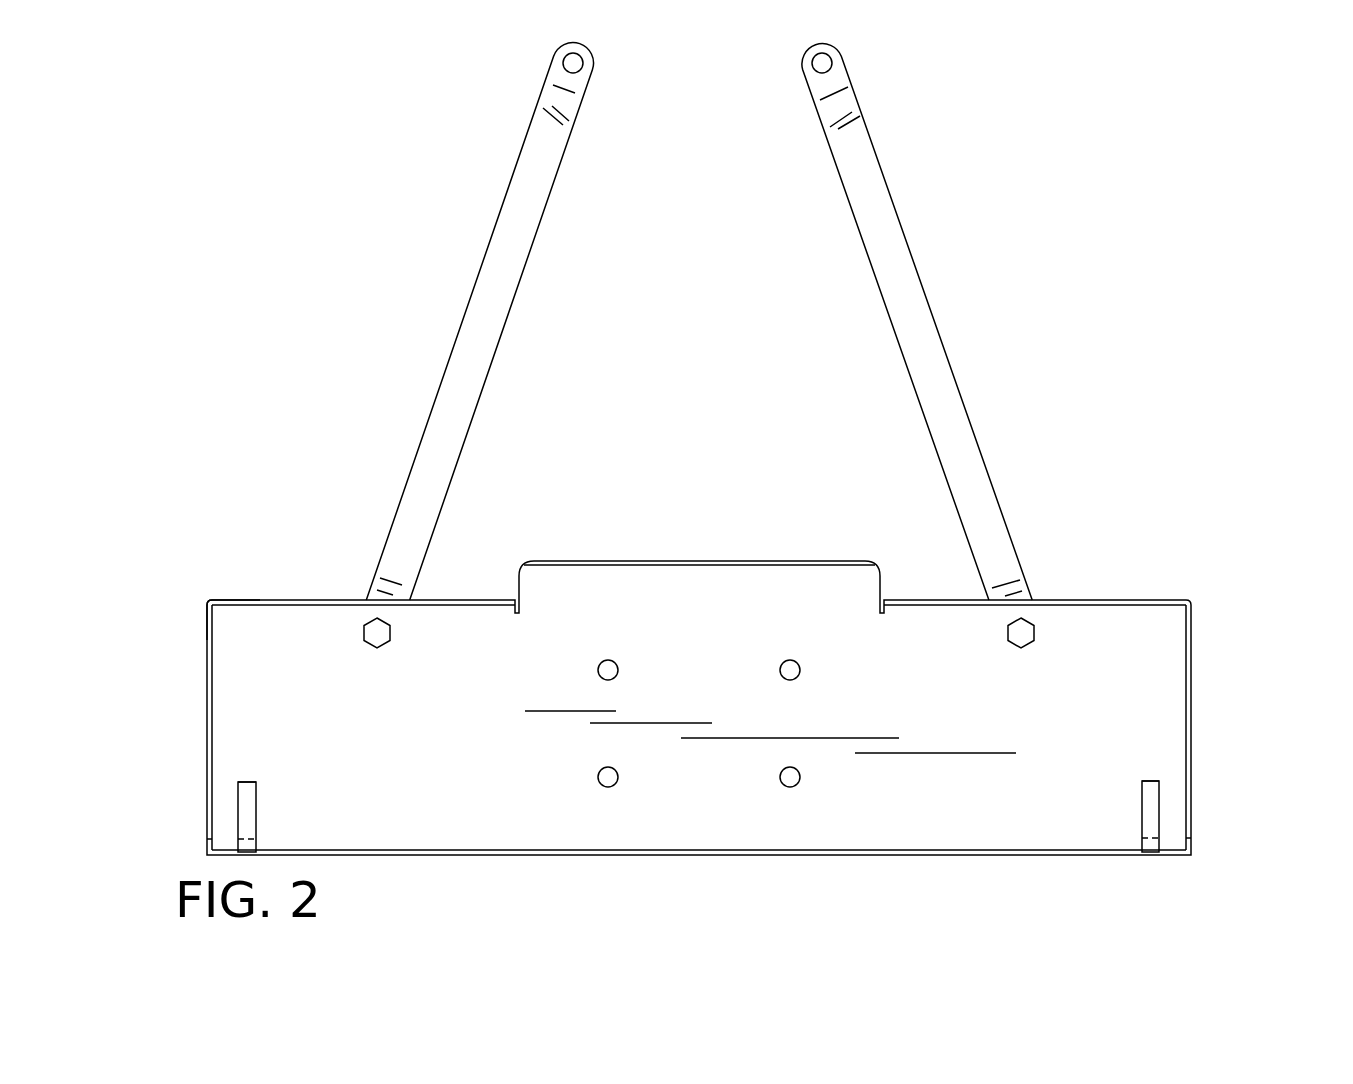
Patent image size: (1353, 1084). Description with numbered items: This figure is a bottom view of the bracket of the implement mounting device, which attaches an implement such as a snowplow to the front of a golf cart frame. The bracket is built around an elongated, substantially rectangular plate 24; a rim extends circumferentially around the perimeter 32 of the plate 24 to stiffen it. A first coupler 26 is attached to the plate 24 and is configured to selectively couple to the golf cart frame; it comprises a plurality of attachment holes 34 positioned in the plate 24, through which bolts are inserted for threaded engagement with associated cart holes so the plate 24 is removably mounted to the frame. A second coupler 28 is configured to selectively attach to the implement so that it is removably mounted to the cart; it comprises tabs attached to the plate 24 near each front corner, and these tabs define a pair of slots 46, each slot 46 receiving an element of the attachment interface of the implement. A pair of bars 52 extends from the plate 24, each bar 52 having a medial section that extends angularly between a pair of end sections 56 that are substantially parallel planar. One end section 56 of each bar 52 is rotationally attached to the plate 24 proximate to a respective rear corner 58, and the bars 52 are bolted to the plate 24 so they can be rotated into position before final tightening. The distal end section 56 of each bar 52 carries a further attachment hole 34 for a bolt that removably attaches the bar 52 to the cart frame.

The plate 24 is at (1135, 652).
The first coupler 26 is at (615, 750).
The second coupler 28 is at (232, 802).
The perimeter 32 is at (205, 828).
The attachment holes 34 is at (810, 78).
The slots 46 is at (1171, 838).
The bars 52 is at (875, 271).
The end sections 56 is at (1016, 575).
The rear corners 58 is at (211, 590).